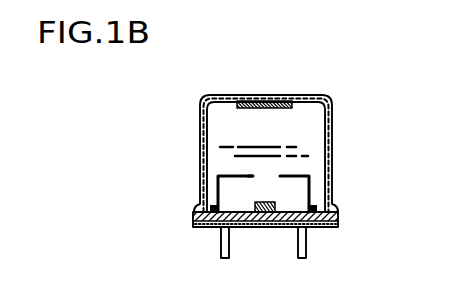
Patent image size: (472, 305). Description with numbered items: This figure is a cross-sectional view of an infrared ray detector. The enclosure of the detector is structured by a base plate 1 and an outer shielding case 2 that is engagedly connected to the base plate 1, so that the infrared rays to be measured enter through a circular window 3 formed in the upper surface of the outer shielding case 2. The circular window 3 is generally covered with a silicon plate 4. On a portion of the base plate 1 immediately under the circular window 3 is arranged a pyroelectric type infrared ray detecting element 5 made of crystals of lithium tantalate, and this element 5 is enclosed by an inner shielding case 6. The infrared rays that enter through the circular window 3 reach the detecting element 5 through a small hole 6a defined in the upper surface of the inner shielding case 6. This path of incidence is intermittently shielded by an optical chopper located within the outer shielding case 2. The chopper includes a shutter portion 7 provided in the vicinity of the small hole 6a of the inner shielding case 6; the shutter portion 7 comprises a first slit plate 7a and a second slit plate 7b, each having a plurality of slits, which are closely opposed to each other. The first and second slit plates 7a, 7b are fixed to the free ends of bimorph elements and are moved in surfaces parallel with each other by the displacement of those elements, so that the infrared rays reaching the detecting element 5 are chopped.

The base plate 1 is at (320, 227).
The outer shielding case 2 is at (333, 116).
The circular window 3 is at (254, 100).
The silicon plate 4 is at (272, 97).
The pyroelectric type infrared ray detecting element 5 is at (263, 228).
The inner shielding case 6 is at (217, 188).
The small hole 6a is at (250, 176).
The shutter portion 7 is at (311, 173).
The first slit plate 7a is at (303, 146).
The second slit plate 7b is at (382, 142).